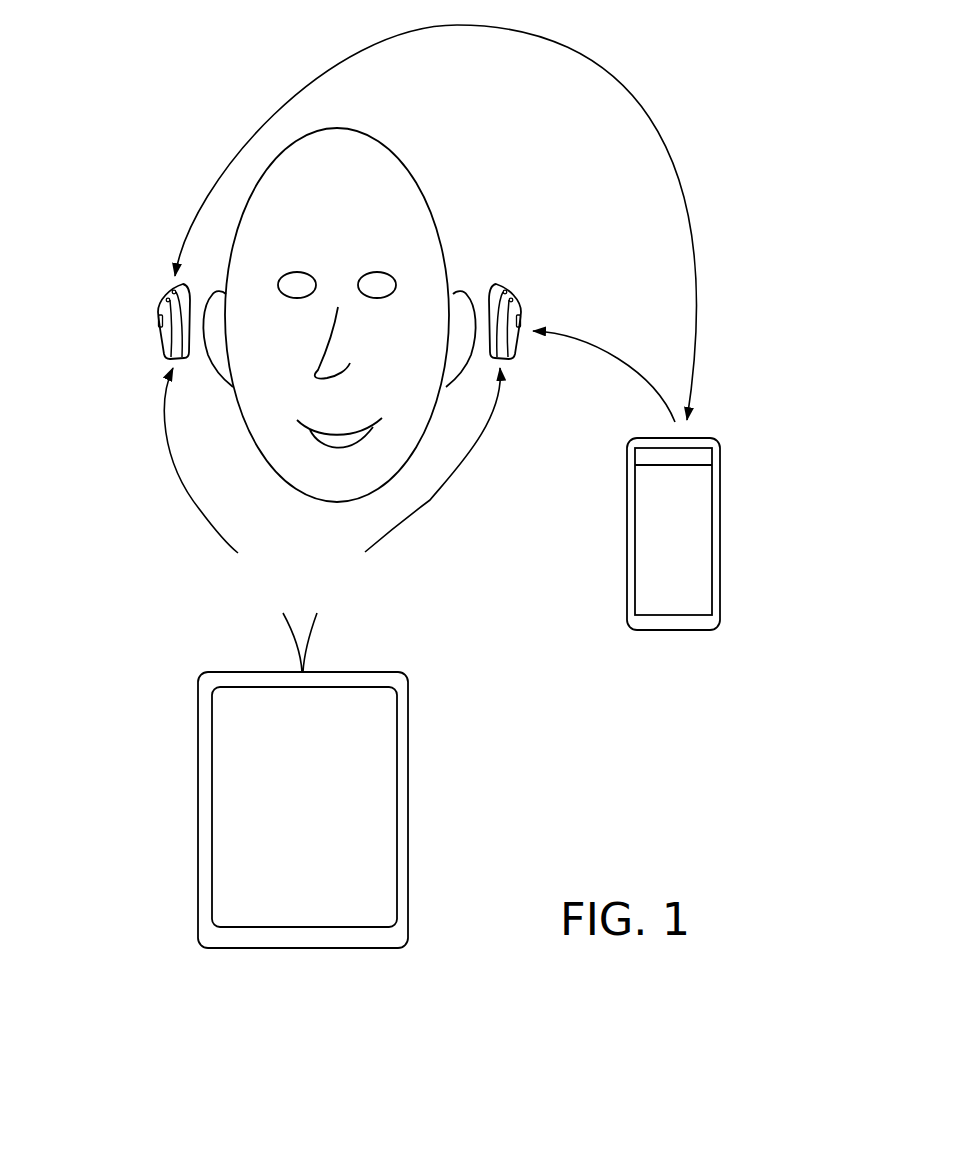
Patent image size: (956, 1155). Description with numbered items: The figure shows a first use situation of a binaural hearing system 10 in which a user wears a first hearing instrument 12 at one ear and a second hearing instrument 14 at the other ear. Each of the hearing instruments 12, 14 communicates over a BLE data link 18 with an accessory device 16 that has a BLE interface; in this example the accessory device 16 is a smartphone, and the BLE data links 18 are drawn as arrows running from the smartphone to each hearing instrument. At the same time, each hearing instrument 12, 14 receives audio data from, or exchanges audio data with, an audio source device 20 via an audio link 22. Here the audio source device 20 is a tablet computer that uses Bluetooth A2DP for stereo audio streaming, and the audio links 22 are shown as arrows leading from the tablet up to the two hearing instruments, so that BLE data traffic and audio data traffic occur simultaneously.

The binaural hearing system 10 is at (432, 147).
The first hearing instrument 12 is at (165, 290).
The second hearing instrument 14 is at (488, 282).
The accessory device 16 is at (688, 457).
The BLE data link 18 is at (643, 108).
The audio source device 20 is at (407, 843).
The audio link 22 is at (167, 465).